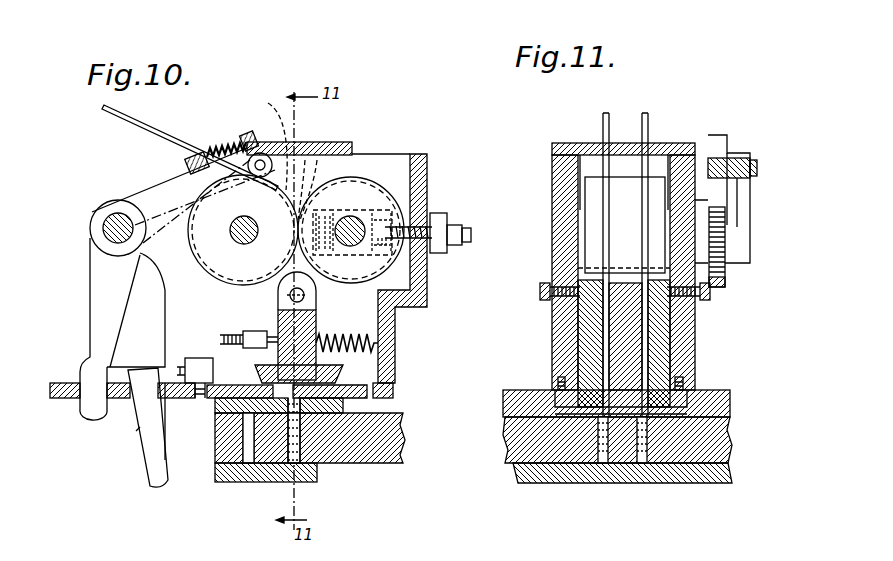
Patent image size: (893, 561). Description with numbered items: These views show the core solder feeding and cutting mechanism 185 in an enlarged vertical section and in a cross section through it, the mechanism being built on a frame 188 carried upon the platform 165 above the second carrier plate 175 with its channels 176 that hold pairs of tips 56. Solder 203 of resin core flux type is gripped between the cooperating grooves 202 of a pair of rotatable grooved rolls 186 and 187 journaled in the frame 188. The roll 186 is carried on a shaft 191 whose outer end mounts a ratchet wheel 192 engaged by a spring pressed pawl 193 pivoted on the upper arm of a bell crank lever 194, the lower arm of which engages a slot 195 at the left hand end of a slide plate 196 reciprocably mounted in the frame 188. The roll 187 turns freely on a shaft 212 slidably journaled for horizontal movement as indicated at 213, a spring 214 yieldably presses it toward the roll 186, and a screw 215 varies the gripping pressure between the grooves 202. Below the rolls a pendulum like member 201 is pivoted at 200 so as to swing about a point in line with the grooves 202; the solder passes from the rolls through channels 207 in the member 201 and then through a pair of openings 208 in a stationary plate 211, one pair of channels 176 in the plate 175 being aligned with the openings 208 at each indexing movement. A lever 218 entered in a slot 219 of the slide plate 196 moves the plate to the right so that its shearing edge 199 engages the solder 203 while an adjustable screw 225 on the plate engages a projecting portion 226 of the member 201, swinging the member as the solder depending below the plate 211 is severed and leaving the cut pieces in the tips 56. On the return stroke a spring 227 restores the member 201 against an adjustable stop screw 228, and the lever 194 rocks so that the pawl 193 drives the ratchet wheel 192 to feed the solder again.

In FIG. 10, the tip 56 is at (294, 478).
In FIG. 11, the tip 56 is at (648, 465).
In FIG. 10, the platform 165 is at (252, 487).
In FIG. 11, the platform 165 is at (585, 474).
In FIG. 10, the second carrier plate 175 is at (405, 425).
In FIG. 11, the second carrier plate 175 is at (510, 430).
In FIG. 10, the channels 176 is at (302, 462).
In FIG. 11, the channels 176 is at (610, 464).
In FIG. 10, the core solder feeding and cutting mechanism 185 is at (335, 174).
In FIG. 10, the grooved roll 186 is at (183, 237).
In FIG. 11, the grooved roll 186 is at (716, 289).
In FIG. 10, the grooved roll 187 is at (318, 294).
In FIG. 10, the frame 188 is at (366, 156).
In FIG. 11, the frame 188 is at (562, 180).
In FIG. 10, the shaft 191 is at (256, 246).
In FIG. 11, the shaft 191 is at (586, 206).
In FIG. 11, the ratchet wheel 192 is at (726, 278).
In FIG. 10, the spring pressed pawl 193 is at (258, 138).
In FIG. 11, the spring pressed pawl 193 is at (735, 216).
In FIG. 10, the bell crank lever 194 is at (91, 232).
In FIG. 11, the bell crank lever 194 is at (733, 254).
In FIG. 10, the slot 195 is at (80, 404).
In FIG. 10, the slide plate 196 is at (88, 348).
In FIG. 11, the slide plate 196 is at (686, 384).
In FIG. 10, the shearing edge 199 is at (246, 401).
In FIG. 11, the pivot 200 is at (688, 322).
In FIG. 10, the pendulum like member 201 is at (330, 364).
In FIG. 11, the pendulum like member 201 is at (581, 351).
In FIG. 10, the cooperating grooves 202 is at (325, 156).
In FIG. 11, the cooperating grooves 202 is at (600, 276).
In FIG. 10, the solder 203 is at (205, 148).
In FIG. 11, the solder 203 is at (644, 121).
In FIG. 10, the channels 207 is at (317, 335).
In FIG. 11, the channels 207 is at (640, 342).
In FIG. 10, the openings 208 is at (386, 386).
In FIG. 11, the openings 208 is at (598, 402).
In FIG. 10, the stationary plate 211 is at (247, 430).
In FIG. 11, the stationary plate 211 is at (688, 406).
In FIG. 10, the shaft 212 is at (357, 247).
In FIG. 10, the slidable journal 213 is at (350, 186).
In FIG. 10, the spring 214 is at (359, 214).
In FIG. 10, the screw 215 is at (440, 226).
In FIG. 10, the lever 218 is at (150, 473).
In FIG. 10, the slot 219 is at (127, 311).
In FIG. 10, the adjustable screw 225 is at (218, 360).
In FIG. 10, the projecting portion 226 is at (224, 340).
In FIG. 10, the spring 227 is at (383, 343).
In FIG. 10, the adjustable stop screw 228 is at (279, 338).